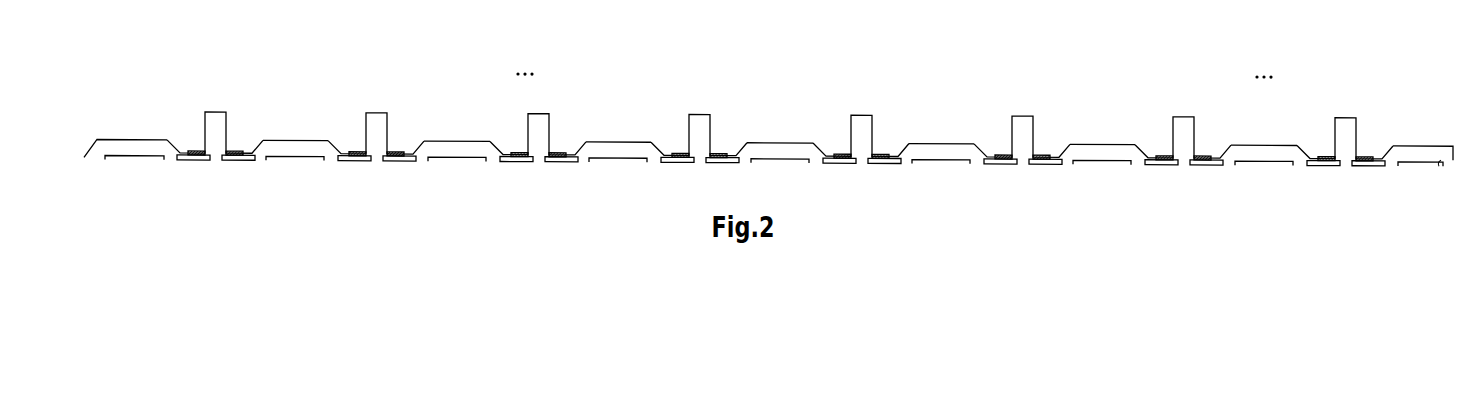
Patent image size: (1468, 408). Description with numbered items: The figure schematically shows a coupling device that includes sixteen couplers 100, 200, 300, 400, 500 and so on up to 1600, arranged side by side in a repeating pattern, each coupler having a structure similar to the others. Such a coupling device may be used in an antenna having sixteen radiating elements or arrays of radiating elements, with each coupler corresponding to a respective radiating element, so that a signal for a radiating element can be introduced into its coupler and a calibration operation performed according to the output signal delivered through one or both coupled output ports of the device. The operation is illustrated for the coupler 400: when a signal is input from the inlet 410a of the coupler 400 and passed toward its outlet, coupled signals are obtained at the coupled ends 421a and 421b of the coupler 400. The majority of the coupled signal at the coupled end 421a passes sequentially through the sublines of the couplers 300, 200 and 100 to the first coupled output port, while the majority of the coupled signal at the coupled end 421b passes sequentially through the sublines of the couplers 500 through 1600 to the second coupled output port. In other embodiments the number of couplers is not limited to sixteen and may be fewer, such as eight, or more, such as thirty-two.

The coupler 100 is at (82, 88).
The coupler 200 is at (164, 77).
The coupler 300 is at (246, 86).
The coupler 400 is at (377, 107).
The coupler 500 is at (407, 86).
The coupler 1600 is at (1292, 84).
The inlet 410a is at (378, 116).
The coupled end 421a is at (333, 159).
The coupled end 421b is at (415, 156).